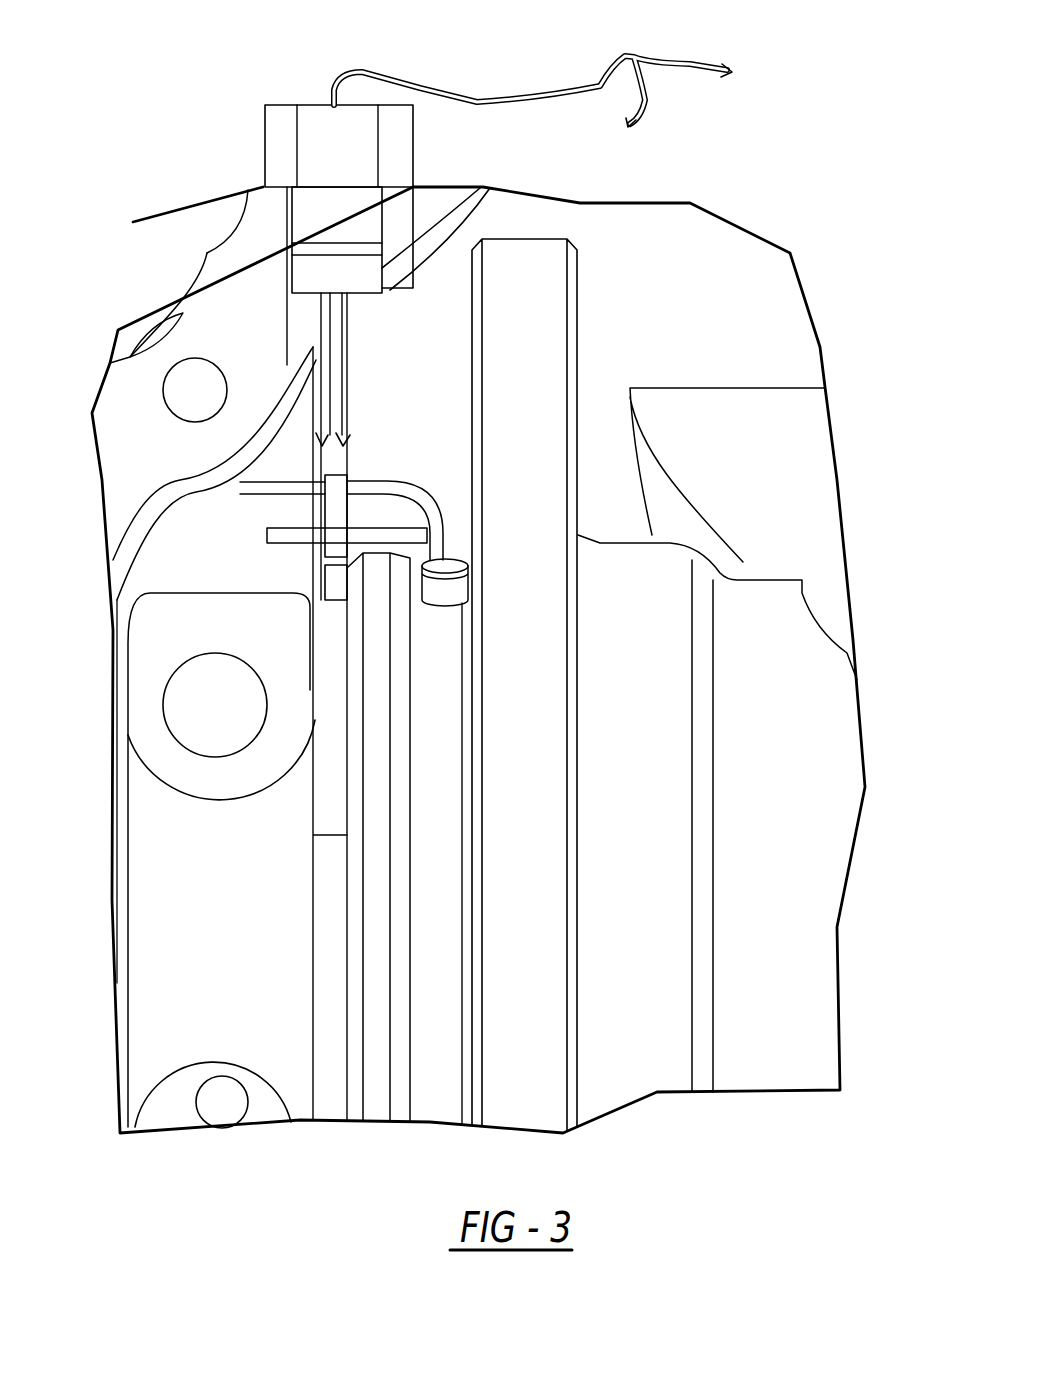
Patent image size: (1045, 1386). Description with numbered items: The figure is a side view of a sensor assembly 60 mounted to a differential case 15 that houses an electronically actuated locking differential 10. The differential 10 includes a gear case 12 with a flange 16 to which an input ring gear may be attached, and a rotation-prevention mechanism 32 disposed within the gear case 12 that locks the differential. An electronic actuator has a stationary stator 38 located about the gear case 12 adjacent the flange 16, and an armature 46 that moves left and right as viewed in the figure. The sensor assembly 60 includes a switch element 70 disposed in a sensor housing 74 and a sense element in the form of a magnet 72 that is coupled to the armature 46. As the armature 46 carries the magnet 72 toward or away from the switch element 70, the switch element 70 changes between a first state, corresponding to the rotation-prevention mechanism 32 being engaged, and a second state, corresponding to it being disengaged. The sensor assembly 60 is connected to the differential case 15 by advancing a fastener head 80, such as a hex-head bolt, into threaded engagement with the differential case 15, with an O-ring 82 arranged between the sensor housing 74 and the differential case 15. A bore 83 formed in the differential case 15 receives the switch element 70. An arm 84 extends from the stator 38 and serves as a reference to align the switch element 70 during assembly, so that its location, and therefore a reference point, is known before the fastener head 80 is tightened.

The electronically actuated locking differential 10 is at (798, 238).
The gear case 12 is at (780, 667).
The differential case 15 is at (140, 450).
The flange 16 is at (522, 1077).
The rotation-prevention mechanism 32 is at (622, 619).
The stator 38 is at (398, 1100).
The armature 46 is at (370, 638).
The sensor assembly 60 is at (283, 240).
The switch element 70 is at (333, 512).
The magnet 72 is at (307, 585).
The sensor housing 74 is at (310, 375).
The fastener head 80 is at (277, 137).
The O-ring 82 is at (420, 187).
The bore 83 is at (287, 208).
The arm 84 is at (337, 578).